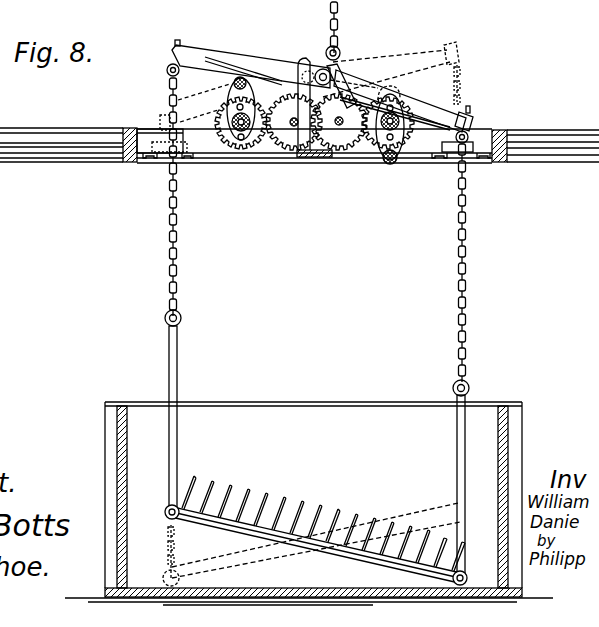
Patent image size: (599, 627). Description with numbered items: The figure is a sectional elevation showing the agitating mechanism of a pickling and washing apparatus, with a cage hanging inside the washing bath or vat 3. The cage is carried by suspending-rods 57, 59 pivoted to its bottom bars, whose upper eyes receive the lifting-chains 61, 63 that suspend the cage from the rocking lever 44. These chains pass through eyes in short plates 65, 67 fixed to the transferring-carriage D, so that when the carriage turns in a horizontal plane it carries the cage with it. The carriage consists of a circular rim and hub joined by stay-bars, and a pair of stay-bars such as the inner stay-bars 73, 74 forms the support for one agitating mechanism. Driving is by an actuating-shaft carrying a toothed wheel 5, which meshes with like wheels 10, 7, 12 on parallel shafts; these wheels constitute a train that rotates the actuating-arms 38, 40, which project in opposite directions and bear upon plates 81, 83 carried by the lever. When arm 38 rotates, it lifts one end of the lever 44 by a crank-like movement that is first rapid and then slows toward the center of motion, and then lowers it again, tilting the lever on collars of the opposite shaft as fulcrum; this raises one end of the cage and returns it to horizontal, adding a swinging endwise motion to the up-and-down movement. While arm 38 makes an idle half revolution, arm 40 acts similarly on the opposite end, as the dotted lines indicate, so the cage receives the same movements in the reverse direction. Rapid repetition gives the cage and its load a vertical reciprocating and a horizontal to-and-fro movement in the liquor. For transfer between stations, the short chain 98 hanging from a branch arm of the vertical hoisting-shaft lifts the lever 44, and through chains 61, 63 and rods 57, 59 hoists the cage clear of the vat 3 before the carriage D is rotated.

The washing bath or vat 3 is at (309, 503).
The toothed wheel 5 is at (287, 147).
The toothed wheel 7 is at (352, 148).
The toothed wheel 10 is at (230, 140).
The toothed wheel 12 is at (378, 148).
The rotating actuating-arm 38 is at (233, 88).
The rotating actuating-arm 40 is at (400, 148).
The rocking lever 44 is at (256, 66).
The suspending-rod 57 is at (180, 372).
The suspending-rod 59 is at (457, 439).
The lifting-chain 61 is at (176, 250).
The lifting-chain 63 is at (464, 266).
The short plate 65 is at (163, 147).
The short plate 67 is at (460, 144).
The inner stay-bar 73 is at (150, 133).
The inner stay-bar 74 is at (426, 56).
The plate 81 is at (243, 71).
The plate 83 is at (403, 101).
The short chain 98 is at (337, 24).
The rake A is at (316, 530).
The transferring-carriage D is at (580, 131).